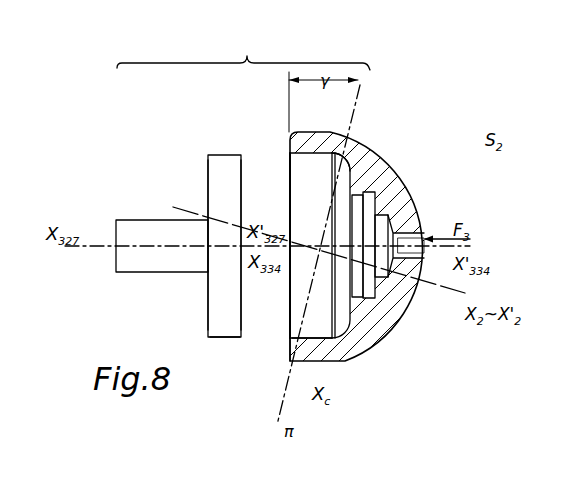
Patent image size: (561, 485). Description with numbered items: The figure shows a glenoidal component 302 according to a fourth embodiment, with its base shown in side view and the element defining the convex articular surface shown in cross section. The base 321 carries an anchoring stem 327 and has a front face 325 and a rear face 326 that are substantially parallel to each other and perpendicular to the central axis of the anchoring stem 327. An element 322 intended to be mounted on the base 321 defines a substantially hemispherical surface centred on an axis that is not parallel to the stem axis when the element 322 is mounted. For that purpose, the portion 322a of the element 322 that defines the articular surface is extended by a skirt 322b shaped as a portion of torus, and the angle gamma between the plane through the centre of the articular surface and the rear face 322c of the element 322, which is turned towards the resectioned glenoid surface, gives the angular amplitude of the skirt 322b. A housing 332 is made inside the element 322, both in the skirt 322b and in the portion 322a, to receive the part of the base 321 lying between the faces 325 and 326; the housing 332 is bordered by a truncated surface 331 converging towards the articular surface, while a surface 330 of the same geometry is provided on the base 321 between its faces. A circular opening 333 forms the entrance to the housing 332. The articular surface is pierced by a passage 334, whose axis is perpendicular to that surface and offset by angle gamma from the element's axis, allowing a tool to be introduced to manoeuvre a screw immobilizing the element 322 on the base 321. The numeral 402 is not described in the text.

The glenoidal component 302 is at (243, 50).
The base 321 is at (222, 163).
The front face 325 is at (248, 181).
The rear face 326 is at (205, 185).
The anchoring stem 327 is at (127, 221).
The truncated surface of the base 330 is at (221, 339).
The element defining the convex articular surface 322 is at (394, 149).
The portion defining the articular surface 322a is at (402, 200).
The skirt 322b is at (347, 151).
The rear face of the element 322c is at (289, 348).
The truncated surface 331 is at (313, 331).
The housing 332 is at (290, 297).
The circular opening 333 is at (291, 322).
The passage 334 is at (425, 257).
The sheet reference 402 is at (270, 484).